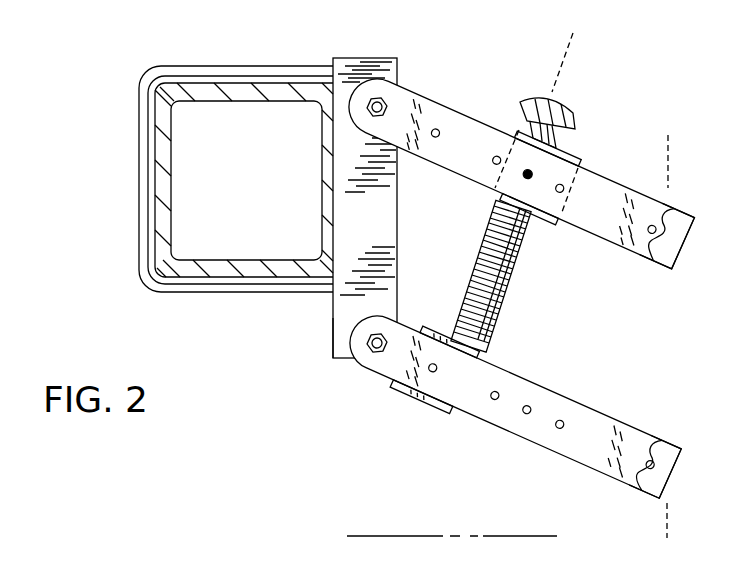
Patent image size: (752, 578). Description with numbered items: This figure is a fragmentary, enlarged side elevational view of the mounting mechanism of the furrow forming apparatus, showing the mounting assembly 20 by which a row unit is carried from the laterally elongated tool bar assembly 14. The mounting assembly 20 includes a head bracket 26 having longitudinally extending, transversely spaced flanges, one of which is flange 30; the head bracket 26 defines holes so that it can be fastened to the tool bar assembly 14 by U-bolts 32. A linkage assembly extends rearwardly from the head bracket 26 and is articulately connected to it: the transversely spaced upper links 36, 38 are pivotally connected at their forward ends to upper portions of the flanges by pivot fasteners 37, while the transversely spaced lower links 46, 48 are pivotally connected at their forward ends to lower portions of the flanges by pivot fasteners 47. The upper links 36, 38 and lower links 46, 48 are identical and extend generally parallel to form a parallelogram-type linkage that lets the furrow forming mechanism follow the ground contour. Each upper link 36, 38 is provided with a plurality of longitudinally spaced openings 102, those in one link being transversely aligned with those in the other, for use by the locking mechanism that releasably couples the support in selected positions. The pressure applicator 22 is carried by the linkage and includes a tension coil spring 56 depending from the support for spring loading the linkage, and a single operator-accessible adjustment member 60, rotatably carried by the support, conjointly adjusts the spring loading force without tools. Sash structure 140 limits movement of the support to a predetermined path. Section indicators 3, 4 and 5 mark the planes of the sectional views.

The tool bar assembly 14 is at (175, 201).
The U-bolts 32 is at (200, 67).
The flange 30 is at (345, 62).
The head bracket 26 is at (330, 334).
The mounting assembly 20 is at (492, 260).
The upper link 38 is at (489, 161).
The upper link 36 is at (667, 235).
The pivot fasteners 37 is at (377, 106).
The sash structure 140 is at (547, 148).
The lower link 48 is at (528, 403).
The lower link 46 is at (655, 466).
The pivot fasteners 47 is at (377, 342).
The openings 102 is at (462, 207).
The tension coil spring 56 is at (520, 249).
The adjustment member 60 is at (570, 125).
The pressure applicator 22 is at (575, 132).
The section line 5- 5 is at (582, 42).
The section line 4- 4 is at (668, 138).
The section line 3- 3 is at (347, 536).